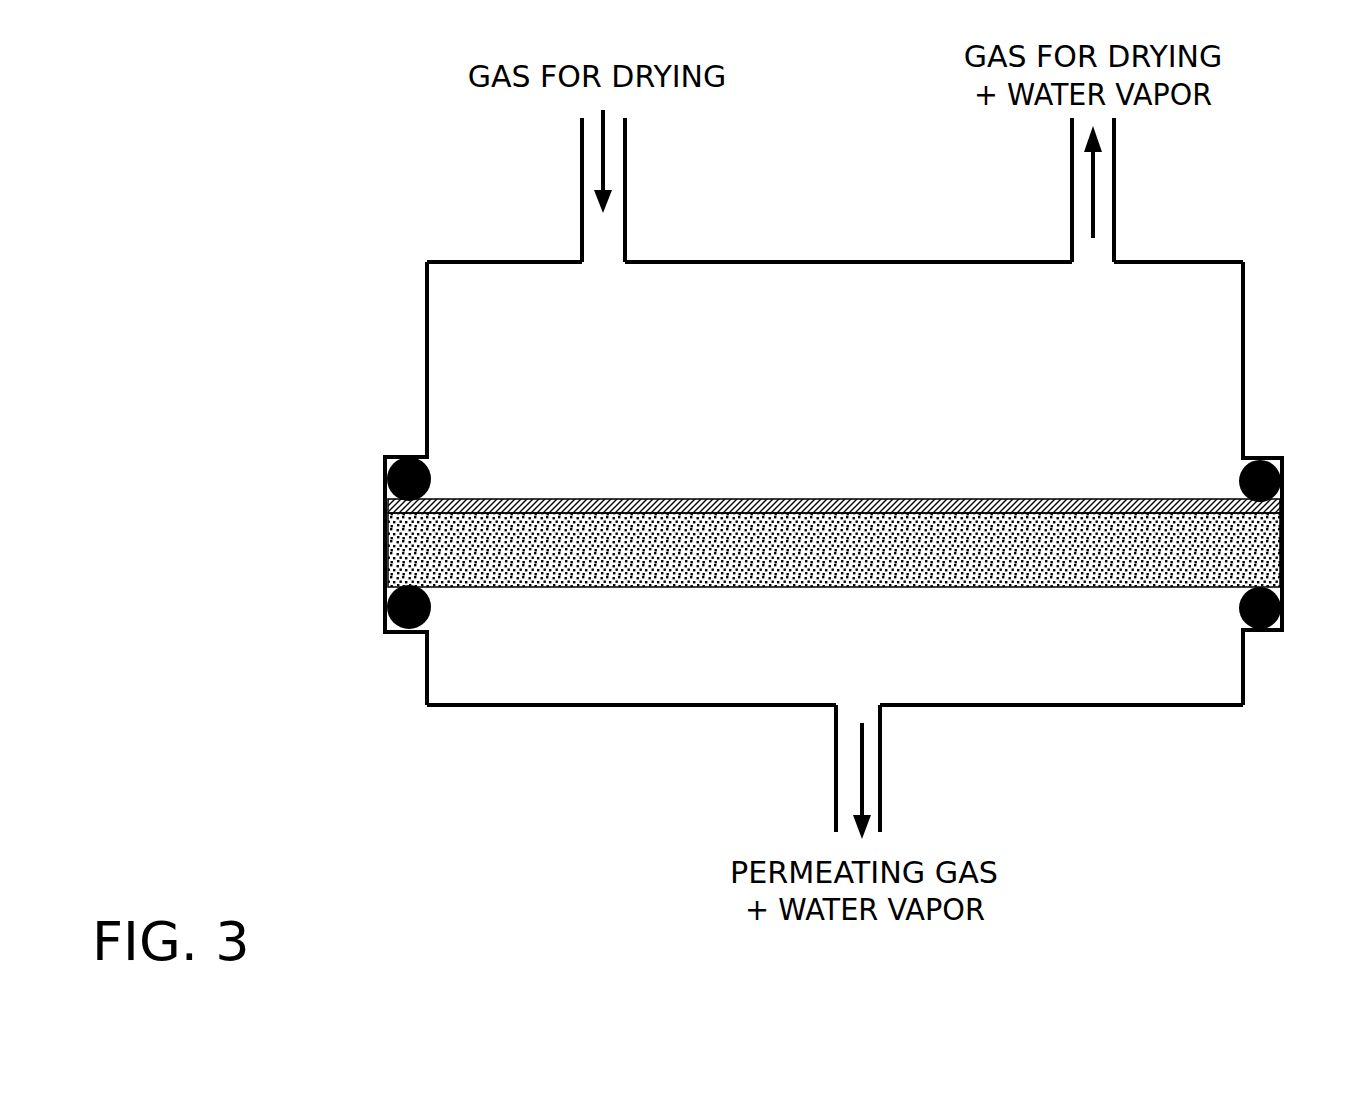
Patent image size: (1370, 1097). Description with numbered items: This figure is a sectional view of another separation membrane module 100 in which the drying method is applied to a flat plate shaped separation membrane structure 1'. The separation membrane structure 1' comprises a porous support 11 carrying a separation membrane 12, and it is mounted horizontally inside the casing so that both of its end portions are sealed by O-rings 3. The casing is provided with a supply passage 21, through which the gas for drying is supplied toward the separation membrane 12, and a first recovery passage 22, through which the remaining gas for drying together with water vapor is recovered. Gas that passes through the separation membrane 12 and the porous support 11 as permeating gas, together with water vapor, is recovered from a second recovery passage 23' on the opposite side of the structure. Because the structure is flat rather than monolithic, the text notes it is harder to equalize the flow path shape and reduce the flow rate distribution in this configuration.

The separation membrane module 100 is at (1309, 210).
The supply passage 21 is at (580, 206).
The first recovery passage 22 is at (1068, 204).
The second recovery passage 23' is at (934, 772).
The flat plate shaped separation membrane structure 1' is at (834, 512).
The separation membrane 12 is at (1149, 498).
The porous support 11 is at (1178, 588).
The O-ring 3 is at (432, 480).